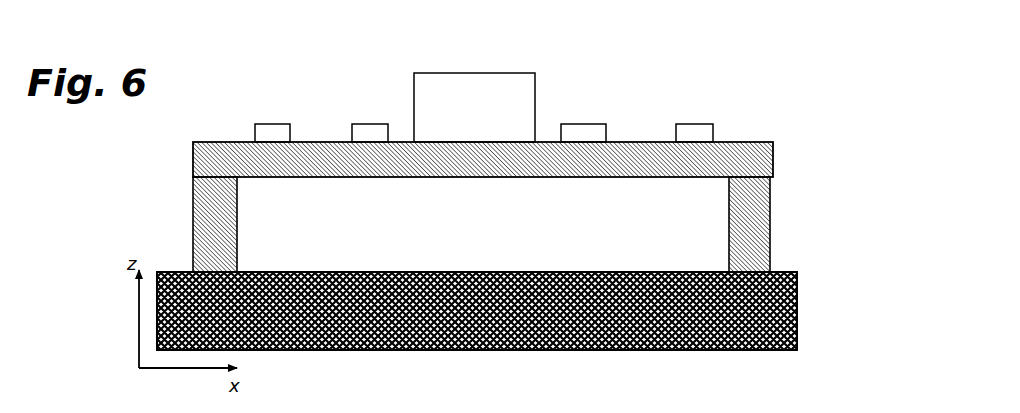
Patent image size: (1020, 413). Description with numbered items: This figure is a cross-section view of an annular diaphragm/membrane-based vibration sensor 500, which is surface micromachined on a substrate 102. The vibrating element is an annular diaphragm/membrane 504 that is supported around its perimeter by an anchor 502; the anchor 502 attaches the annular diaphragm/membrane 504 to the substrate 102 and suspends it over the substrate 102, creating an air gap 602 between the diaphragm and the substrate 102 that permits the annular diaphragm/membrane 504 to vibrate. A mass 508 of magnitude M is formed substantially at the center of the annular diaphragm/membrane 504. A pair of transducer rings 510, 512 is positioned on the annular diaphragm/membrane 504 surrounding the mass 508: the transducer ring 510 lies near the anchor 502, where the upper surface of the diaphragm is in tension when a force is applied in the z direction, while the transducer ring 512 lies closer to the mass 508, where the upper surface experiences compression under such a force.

The substrate 102 is at (797, 330).
The MEMS resonator device 500 is at (790, 113).
The anchor 502 is at (193, 203).
The annular diaphragm/membrane 504 is at (768, 167).
The mass 508 is at (474, 107).
The transducer ring 510 is at (273, 116).
The transducer ring 512 is at (355, 116).
The air gap 602 is at (483, 224).